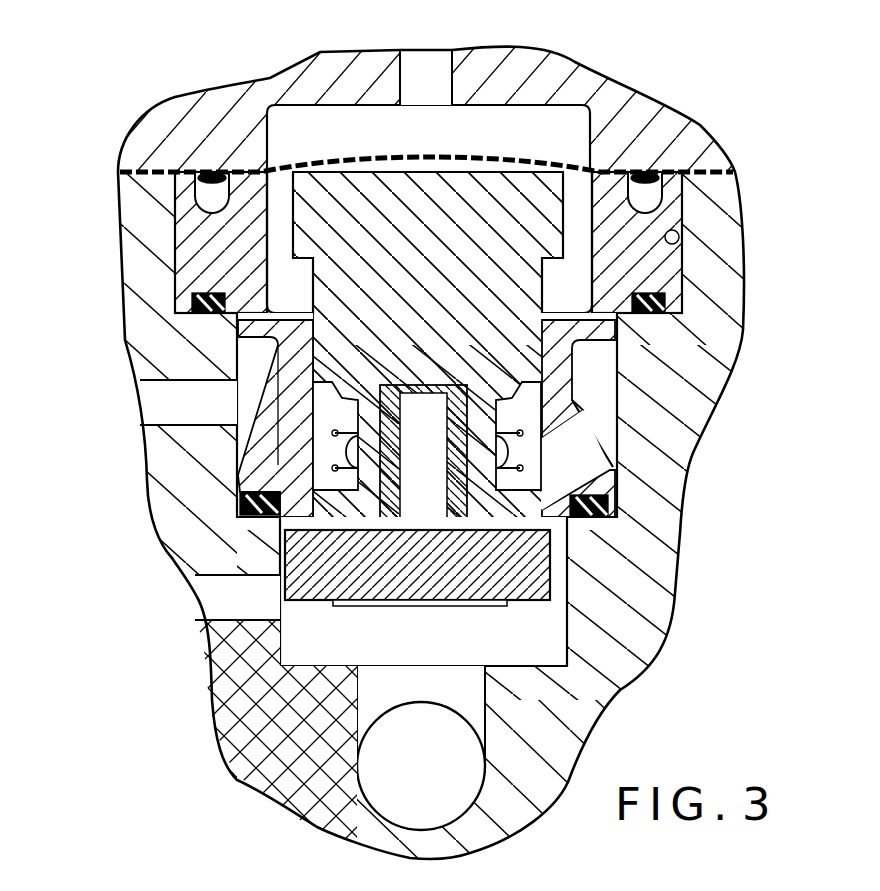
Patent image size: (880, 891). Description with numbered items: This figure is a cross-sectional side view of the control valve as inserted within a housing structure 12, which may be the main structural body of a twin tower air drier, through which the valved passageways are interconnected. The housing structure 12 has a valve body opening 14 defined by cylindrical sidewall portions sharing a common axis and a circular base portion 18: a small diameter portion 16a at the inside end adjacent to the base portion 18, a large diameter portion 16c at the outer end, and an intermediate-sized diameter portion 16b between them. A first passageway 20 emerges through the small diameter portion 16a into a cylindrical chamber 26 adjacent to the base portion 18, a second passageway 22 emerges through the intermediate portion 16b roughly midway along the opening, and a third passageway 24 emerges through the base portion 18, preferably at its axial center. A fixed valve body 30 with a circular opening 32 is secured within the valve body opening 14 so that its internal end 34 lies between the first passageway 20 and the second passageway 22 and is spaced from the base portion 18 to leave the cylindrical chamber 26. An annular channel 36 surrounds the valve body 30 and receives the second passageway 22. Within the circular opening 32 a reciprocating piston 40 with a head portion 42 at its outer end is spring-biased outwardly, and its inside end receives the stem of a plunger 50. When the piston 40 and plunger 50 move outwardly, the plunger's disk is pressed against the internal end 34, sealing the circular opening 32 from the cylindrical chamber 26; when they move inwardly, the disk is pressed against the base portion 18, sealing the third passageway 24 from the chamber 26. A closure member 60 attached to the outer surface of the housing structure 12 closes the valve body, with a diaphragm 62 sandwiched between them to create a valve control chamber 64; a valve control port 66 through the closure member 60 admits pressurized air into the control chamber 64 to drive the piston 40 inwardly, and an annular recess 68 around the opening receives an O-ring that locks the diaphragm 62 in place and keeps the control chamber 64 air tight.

The housing structure 12 is at (667, 523).
The valve body opening 14 is at (190, 298).
The small diameter portion 16a is at (590, 657).
The intermediate-sized diameter portion 16b is at (600, 440).
The large diameter portion 16c is at (681, 221).
The base portion 18 is at (262, 718).
The first passageway 20 is at (217, 600).
The second passageway 22 is at (155, 401).
The third passageway 24 is at (373, 698).
The cylindrical chamber 26 is at (290, 633).
The fixed valve body 30 is at (183, 254).
The circular opening 32 is at (277, 188).
The internal end 34 is at (530, 572).
The annular channel 36 is at (603, 390).
The reciprocating piston 40 is at (537, 186).
The head portion 42 is at (243, 215).
The plunger 50 is at (555, 602).
The closure member 60 is at (517, 70).
The diaphragm 62 is at (602, 172).
The valve control chamber 64 is at (345, 120).
The valve control port 66 is at (430, 62).
The annular recess 68 is at (212, 185).